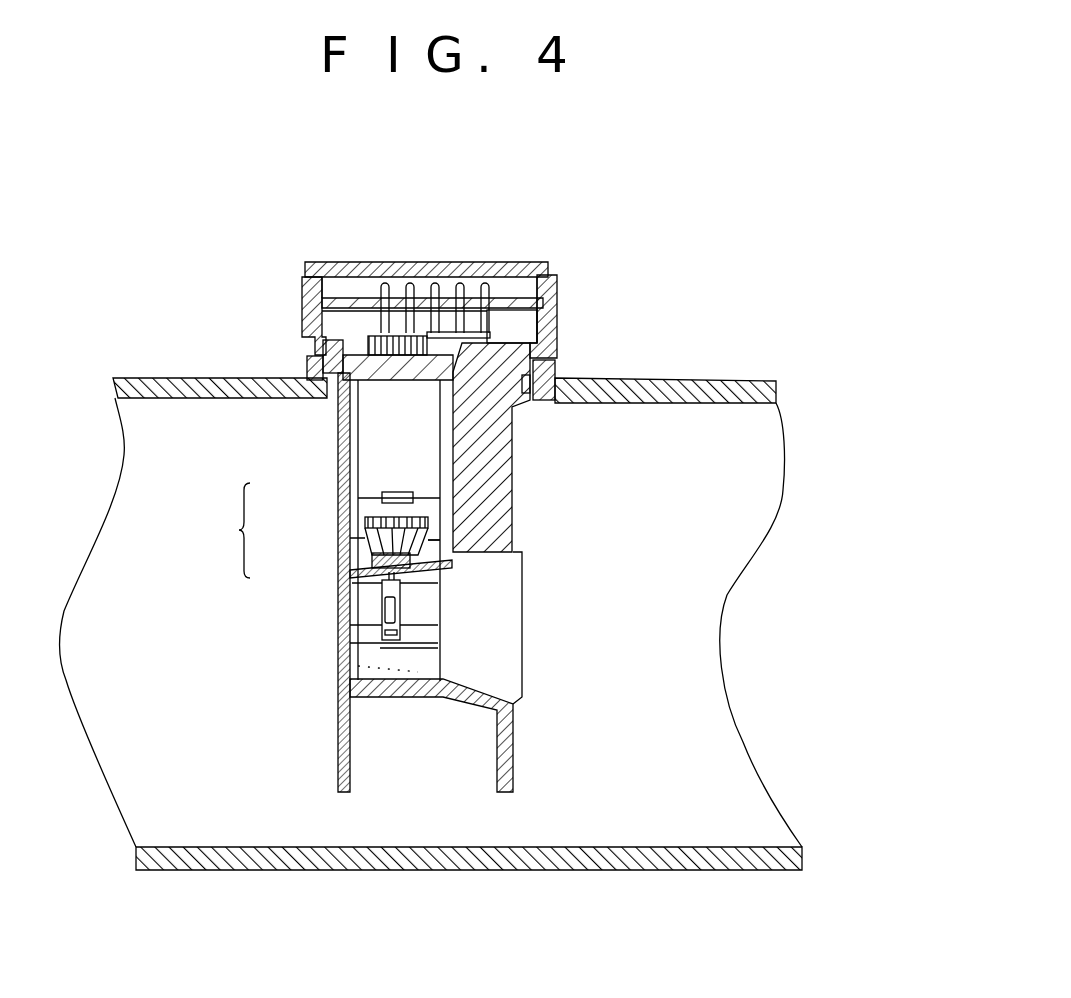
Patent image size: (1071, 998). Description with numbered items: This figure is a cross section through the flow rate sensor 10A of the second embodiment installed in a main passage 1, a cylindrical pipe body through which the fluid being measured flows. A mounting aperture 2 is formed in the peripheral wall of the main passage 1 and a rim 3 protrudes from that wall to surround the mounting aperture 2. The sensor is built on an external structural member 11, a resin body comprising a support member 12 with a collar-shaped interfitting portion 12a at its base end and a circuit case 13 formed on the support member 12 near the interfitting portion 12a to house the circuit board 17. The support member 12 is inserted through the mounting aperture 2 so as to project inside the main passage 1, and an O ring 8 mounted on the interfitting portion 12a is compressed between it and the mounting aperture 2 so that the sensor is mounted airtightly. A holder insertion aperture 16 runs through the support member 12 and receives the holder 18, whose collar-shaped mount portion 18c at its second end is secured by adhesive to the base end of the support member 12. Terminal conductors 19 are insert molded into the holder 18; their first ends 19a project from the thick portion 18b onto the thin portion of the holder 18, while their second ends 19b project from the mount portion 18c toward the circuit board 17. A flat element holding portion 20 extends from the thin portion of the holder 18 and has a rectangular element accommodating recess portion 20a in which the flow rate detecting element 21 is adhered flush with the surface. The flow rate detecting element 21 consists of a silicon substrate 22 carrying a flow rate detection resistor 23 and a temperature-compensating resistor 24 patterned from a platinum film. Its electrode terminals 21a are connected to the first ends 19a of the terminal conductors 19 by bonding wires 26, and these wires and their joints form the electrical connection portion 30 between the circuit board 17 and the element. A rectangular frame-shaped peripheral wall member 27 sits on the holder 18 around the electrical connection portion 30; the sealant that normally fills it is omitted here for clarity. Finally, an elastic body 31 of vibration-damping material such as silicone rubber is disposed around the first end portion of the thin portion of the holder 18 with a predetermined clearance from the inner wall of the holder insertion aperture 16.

The main passage 1 is at (180, 380).
The mounting aperture 2 is at (330, 404).
The rim 3 is at (320, 348).
The O ring 8 is at (306, 364).
The flow rate sensor 10A is at (572, 290).
The external structural member 11 is at (513, 430).
The support member 12 is at (508, 459).
The interfitting portion 12a is at (555, 360).
The circuit case 13 is at (302, 298).
The holder insertion aperture 16 is at (346, 438).
The circuit board 17 is at (367, 300).
The holder 18 is at (438, 493).
The thick portion 18b is at (425, 466).
The mount portion 18c is at (355, 360).
The terminal conductors 19 is at (492, 318).
The first ends of terminal conductors 19a is at (365, 520).
The second ends of terminal conductors 19b is at (387, 295).
The element holding portion 20 is at (421, 660).
The element accommodating recess portion 20a is at (410, 578).
The flow rate detecting element 21 is at (404, 614).
The electrode terminals 21a is at (372, 563).
The silicon substrate 22 is at (382, 584).
The flow rate detection resistor 23 is at (386, 610).
The temperature-compensating resistor 24 is at (386, 633).
The bonding wires 26 is at (365, 542).
The peripheral wall member 27 is at (430, 548).
The electrical connection portion 30 is at (228, 530).
The elastic body 31 is at (438, 580).